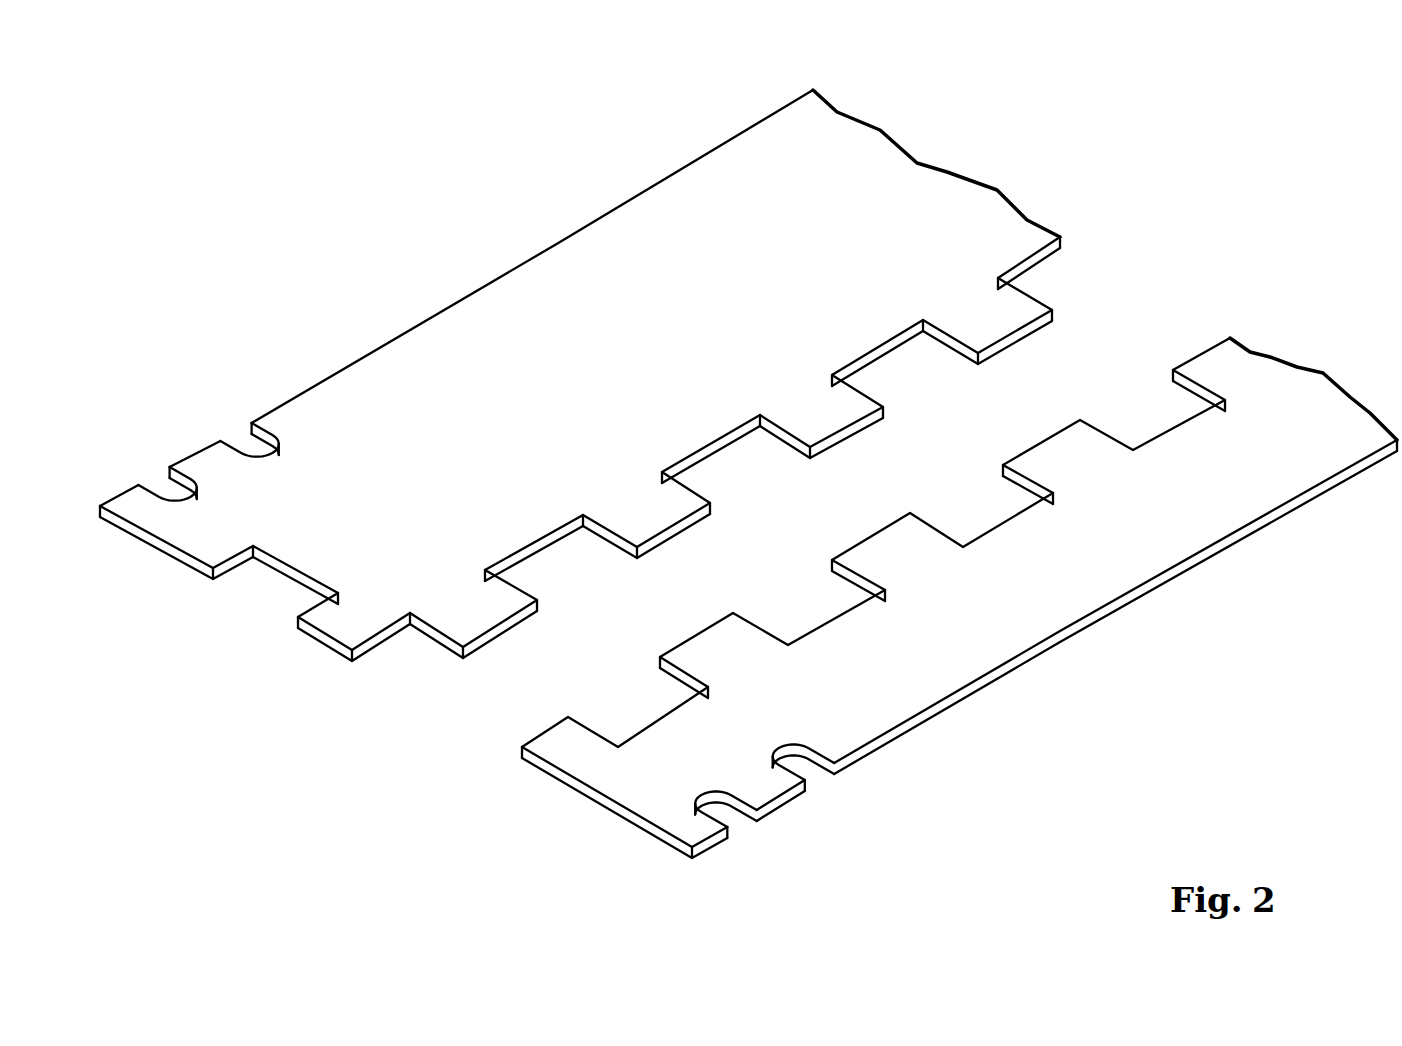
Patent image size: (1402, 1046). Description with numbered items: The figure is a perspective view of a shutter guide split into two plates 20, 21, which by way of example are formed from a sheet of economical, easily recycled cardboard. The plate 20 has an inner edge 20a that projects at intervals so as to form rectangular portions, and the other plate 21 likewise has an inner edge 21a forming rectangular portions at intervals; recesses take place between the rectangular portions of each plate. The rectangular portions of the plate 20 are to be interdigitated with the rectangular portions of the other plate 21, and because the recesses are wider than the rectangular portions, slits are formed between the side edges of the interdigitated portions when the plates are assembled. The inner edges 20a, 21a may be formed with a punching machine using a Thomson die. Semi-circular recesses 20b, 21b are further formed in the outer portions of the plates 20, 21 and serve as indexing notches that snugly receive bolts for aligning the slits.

The plate 20 is at (959, 615).
The inner edge 20a is at (668, 676).
The semi-circular recesses 20b is at (747, 813).
The plate 21 is at (580, 375).
The inner edge 21a is at (540, 548).
The semi-circular recesses 21b is at (233, 440).